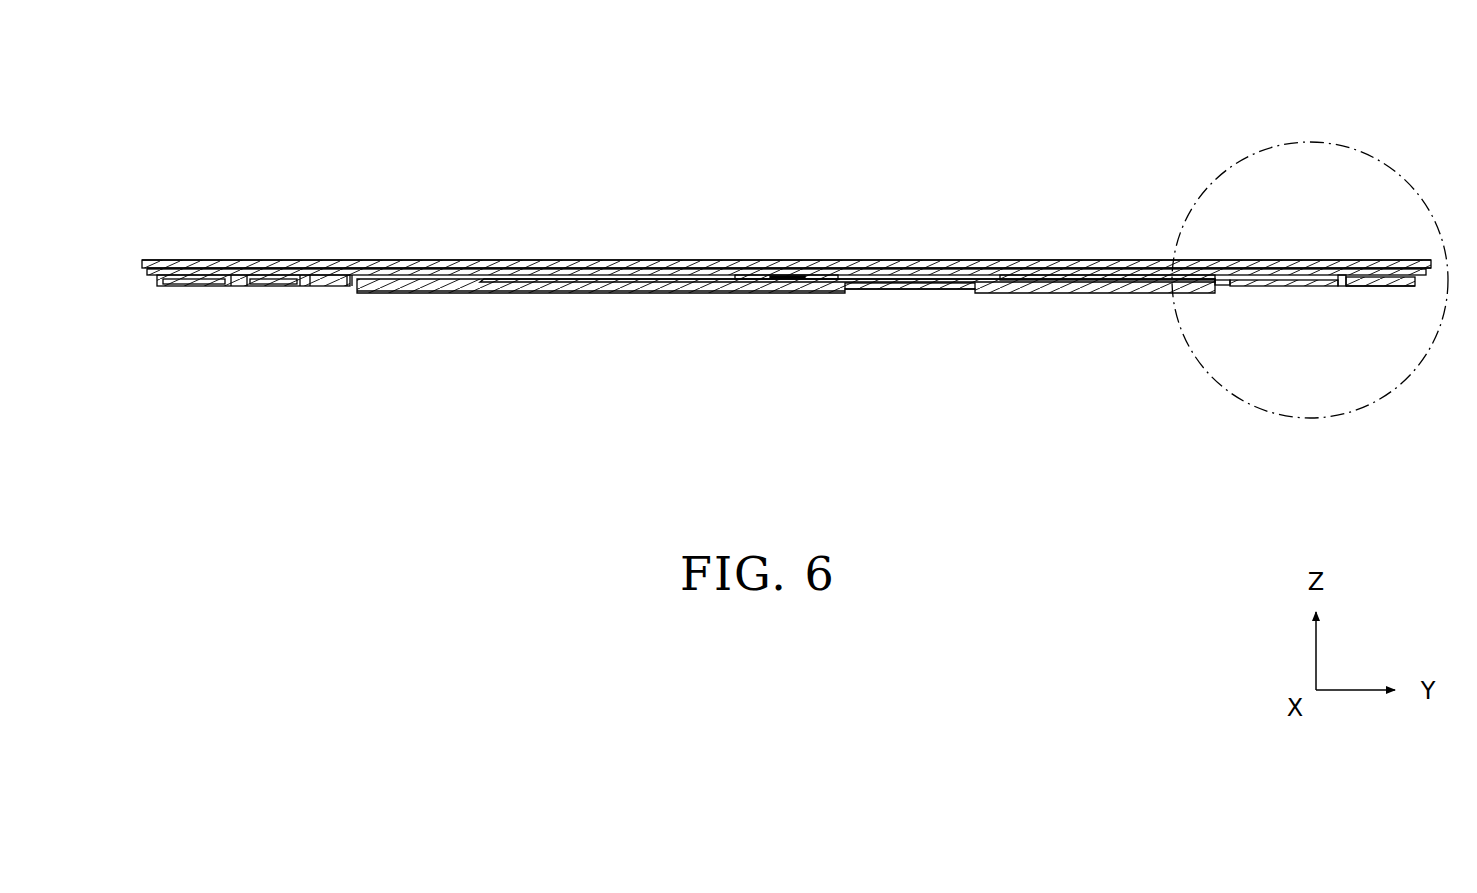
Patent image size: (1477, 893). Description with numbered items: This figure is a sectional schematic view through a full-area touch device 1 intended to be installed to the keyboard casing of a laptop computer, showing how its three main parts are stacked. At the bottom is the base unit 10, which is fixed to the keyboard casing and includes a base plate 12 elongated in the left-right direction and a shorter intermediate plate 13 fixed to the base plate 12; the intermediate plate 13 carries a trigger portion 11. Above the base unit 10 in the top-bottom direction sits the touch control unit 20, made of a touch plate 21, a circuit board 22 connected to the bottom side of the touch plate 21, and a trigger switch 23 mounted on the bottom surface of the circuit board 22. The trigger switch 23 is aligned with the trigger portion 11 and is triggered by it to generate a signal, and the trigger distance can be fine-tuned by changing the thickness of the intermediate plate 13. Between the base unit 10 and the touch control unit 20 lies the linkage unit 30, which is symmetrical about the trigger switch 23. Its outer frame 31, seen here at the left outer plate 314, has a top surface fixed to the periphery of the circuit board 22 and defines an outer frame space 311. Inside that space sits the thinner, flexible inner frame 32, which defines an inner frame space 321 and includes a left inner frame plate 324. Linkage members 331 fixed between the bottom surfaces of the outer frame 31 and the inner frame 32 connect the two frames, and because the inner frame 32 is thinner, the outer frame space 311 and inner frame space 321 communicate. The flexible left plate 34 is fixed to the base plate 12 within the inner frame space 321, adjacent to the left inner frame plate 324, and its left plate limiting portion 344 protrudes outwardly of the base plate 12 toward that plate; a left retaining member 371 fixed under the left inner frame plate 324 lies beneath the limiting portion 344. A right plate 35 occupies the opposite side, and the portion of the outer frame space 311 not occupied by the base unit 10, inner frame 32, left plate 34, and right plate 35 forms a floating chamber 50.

The full-area touch device 1 is at (175, 256).
The base unit 10 is at (480, 297).
The trigger portion 11 is at (800, 290).
The base plate 12 is at (662, 290).
The intermediate plate 13 is at (722, 289).
The touch control unit 20 is at (1386, 257).
The touch plate 21 is at (1310, 263).
The circuit board 22 is at (1357, 270).
The trigger switch 23 is at (742, 275).
The linkage unit 30 is at (156, 288).
The outer frame 31 is at (1412, 285).
The outer frame space 311 is at (1342, 288).
The left outer plate 314 is at (187, 285).
The inner frame 32 is at (1245, 289).
The inner frame space 321 is at (1172, 283).
The left inner frame plate 324 is at (276, 286).
The linkage member 331 is at (1372, 288).
The left plate 34 is at (372, 275).
The left plate limiting portion 344 is at (348, 275).
The right plate 35 is at (1140, 276).
The left retaining member 371 is at (312, 286).
The floating chamber 50 is at (1180, 279).